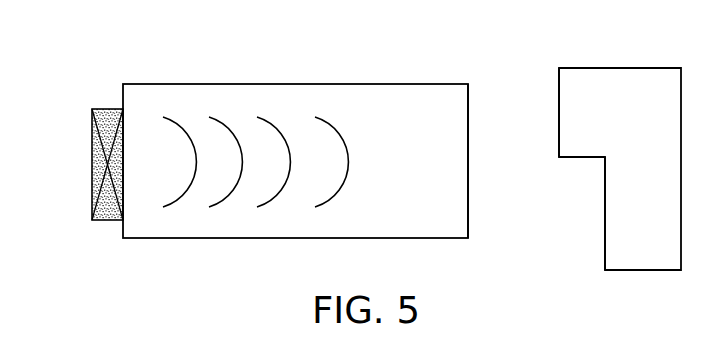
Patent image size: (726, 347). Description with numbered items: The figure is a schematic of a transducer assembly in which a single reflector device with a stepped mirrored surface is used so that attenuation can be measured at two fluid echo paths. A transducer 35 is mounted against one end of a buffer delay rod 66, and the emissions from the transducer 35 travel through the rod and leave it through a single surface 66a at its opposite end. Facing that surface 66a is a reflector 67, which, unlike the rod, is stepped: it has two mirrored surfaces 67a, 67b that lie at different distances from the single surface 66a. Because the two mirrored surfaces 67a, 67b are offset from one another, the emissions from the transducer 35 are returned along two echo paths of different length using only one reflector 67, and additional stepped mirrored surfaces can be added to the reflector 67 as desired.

The transducer 35 is at (92, 163).
The buffer delay rod 66 is at (287, 84).
The single surface 66a is at (469, 124).
The reflector 67 is at (619, 68).
The first mirrored surface 67a is at (559, 114).
The second mirrored surface 67b is at (605, 206).